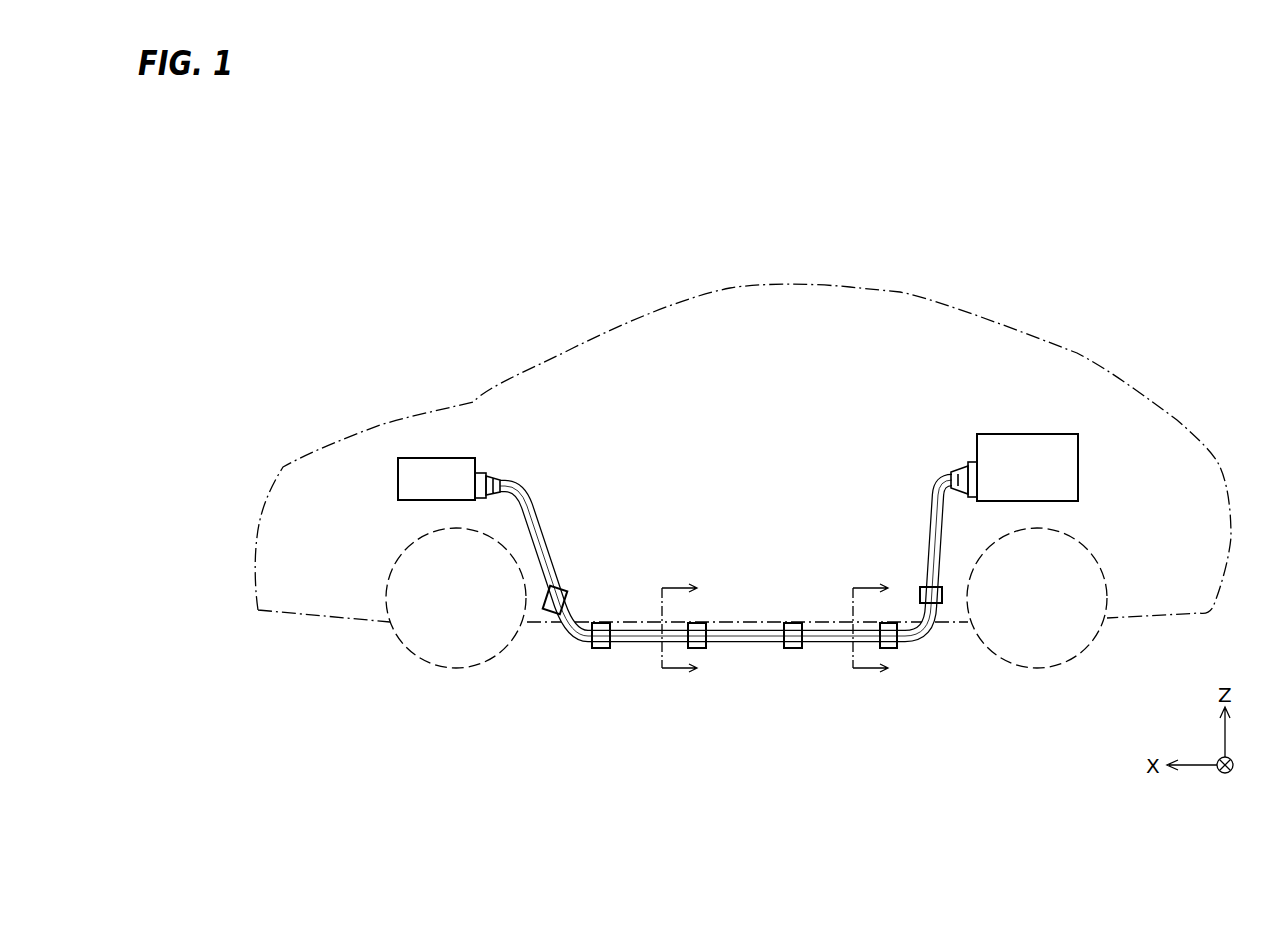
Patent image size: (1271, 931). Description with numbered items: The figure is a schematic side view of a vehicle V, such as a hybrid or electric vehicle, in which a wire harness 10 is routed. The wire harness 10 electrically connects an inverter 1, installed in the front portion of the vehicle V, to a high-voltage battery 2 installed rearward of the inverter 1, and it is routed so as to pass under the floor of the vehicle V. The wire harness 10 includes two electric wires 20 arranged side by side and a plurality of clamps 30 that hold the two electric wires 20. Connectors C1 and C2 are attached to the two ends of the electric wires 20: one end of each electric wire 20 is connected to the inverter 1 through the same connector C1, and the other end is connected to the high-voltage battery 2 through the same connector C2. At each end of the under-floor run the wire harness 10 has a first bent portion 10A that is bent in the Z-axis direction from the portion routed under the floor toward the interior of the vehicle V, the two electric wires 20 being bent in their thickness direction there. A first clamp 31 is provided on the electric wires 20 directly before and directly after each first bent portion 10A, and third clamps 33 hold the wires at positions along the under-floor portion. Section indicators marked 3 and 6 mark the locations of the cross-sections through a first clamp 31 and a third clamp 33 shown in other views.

The vehicle V is at (1000, 318).
The inverter 1 is at (437, 458).
The high-voltage battery 2 is at (1022, 434).
The wire harness 10 is at (891, 407).
The first bent portion 10A is at (565, 640).
The electric wire 20 is at (540, 510).
The clamp 30 is at (742, 588).
The first clamp 31 is at (600, 622).
The third clamp 33 is at (790, 622).
The connector C1 is at (494, 476).
The connector C2 is at (964, 468).
The section line III 3 is at (870, 631).
The section line VI 6 is at (679, 631).